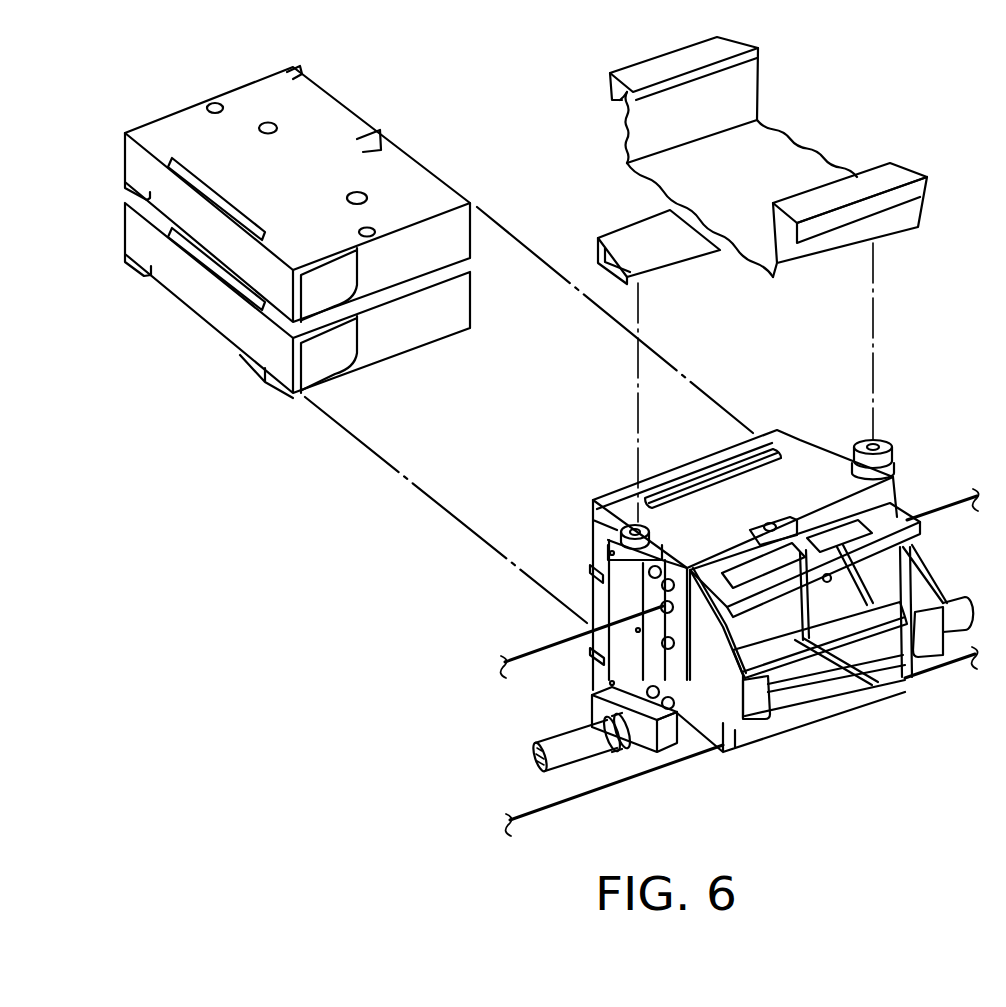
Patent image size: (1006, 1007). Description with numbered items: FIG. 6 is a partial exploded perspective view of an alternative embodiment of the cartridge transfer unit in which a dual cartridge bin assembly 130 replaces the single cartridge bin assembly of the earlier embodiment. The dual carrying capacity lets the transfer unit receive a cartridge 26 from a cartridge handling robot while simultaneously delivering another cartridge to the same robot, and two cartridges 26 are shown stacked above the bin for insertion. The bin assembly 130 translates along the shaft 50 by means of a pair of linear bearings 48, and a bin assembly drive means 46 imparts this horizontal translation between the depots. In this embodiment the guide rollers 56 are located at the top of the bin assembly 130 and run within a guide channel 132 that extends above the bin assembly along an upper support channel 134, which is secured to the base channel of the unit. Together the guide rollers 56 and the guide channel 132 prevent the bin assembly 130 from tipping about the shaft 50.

The cartridge 26 is at (123, 227).
The bin assembly drive means 46 is at (563, 642).
The linear bearings 48 is at (642, 750).
The shaft 50 is at (957, 610).
The guide rollers 56 is at (633, 527).
The dual cartridge bin assembly 130 is at (875, 725).
The guide channel 132 is at (635, 240).
The upper support channel 134 is at (678, 187).